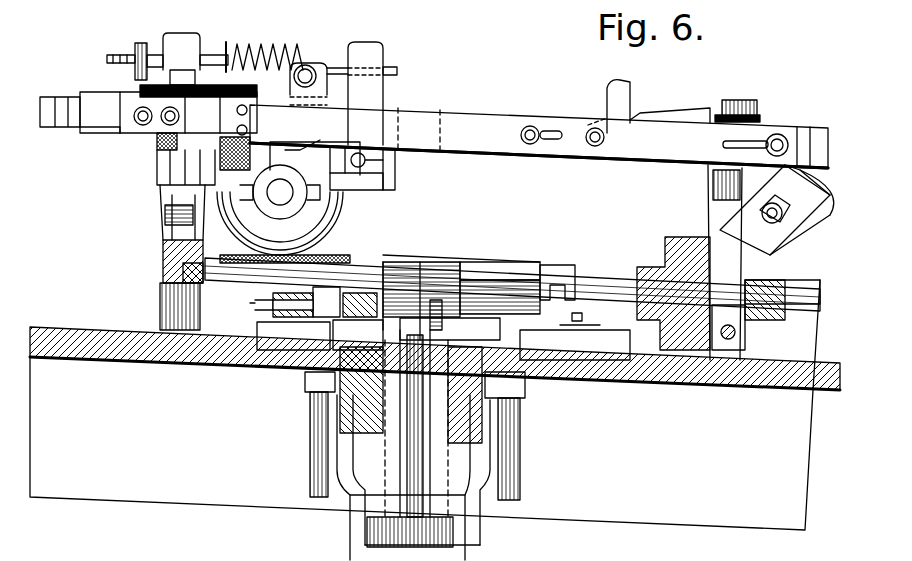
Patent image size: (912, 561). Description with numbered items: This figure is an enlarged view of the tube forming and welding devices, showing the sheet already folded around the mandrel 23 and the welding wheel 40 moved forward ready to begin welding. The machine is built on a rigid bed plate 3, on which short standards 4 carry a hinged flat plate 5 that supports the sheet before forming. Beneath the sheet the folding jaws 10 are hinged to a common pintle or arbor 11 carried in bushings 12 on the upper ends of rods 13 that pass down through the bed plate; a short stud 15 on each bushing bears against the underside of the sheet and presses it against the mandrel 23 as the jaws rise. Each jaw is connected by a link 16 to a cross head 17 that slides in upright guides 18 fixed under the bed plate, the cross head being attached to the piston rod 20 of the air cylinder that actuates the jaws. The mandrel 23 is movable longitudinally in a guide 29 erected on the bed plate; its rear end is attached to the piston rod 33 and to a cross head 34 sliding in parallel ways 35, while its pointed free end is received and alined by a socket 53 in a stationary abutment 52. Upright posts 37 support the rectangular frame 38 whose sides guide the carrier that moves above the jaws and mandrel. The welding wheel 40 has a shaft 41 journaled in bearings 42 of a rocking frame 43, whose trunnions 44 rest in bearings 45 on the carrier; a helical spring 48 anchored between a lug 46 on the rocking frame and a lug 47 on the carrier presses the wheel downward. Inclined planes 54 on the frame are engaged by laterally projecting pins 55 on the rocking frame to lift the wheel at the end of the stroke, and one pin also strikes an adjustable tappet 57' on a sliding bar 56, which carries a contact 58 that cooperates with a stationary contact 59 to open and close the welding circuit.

The bed plate 3 is at (60, 360).
The standards 4 is at (582, 318).
The flat plate 5 is at (562, 267).
The folding jaws 10 is at (463, 280).
The pintle or arbor 11 is at (365, 317).
The bushings 12 is at (347, 290).
The rods 13 is at (310, 447).
The stud 15 is at (330, 287).
The link 16 is at (437, 328).
The cross head 17 is at (413, 453).
The upright guides 18 is at (383, 485).
The piston rod 20 is at (410, 493).
The mandrel 23 is at (256, 283).
The guide 29 is at (682, 252).
The piston rod 33 is at (788, 302).
The cross head 34 is at (740, 327).
The parallel ways 35 is at (807, 285).
The upright posts 37 is at (160, 303).
The rectangular frame 38 is at (495, 152).
The welding wheel 40 is at (343, 213).
The shaft 41 is at (327, 185).
The bearings 42 is at (347, 190).
The rocking frame 43 is at (338, 160).
The trunnions 44 is at (366, 162).
The bearings 45 is at (393, 178).
The lug 46 is at (385, 96).
The lug 47 is at (182, 65).
The helical spring 48 is at (283, 43).
The stationary abutment 52 is at (170, 257).
The socket 53 is at (192, 275).
The inclined planes 54 is at (682, 113).
The pins 55 is at (307, 70).
The sliding bar 56 is at (480, 120).
The tappet 57' is at (605, 97).
The contact 58 is at (148, 138).
The stationary contact 59 is at (148, 138).